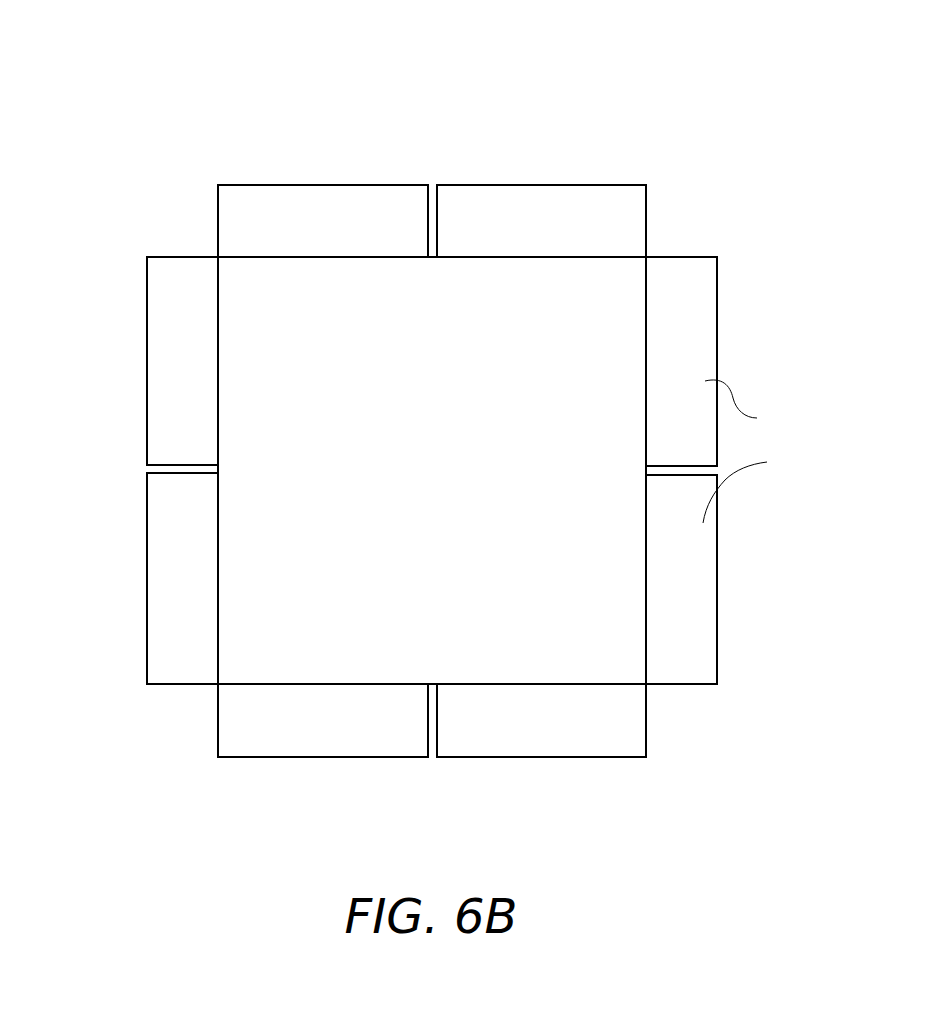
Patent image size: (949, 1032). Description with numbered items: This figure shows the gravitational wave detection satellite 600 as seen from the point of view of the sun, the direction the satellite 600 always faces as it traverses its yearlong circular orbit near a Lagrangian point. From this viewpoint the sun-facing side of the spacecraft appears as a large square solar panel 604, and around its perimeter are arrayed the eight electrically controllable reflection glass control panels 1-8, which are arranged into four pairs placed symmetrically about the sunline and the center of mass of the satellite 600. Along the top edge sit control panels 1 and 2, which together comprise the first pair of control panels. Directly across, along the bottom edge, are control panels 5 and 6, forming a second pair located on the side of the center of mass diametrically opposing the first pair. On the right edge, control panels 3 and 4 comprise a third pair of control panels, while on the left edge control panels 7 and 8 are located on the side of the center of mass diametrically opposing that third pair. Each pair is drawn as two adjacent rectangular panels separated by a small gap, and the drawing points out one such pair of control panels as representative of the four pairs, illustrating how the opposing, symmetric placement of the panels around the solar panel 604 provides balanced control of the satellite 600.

The satellite 600 is at (382, 92).
The solar panel 604 is at (432, 470).
The control panel 1 is at (323, 221).
The control panel 2 is at (541, 221).
The control panel 3 is at (681, 361).
The control panel 4 is at (681, 579).
The control panel 5 is at (541, 720).
The control panel 6 is at (323, 720).
The control panel 7 is at (182, 578).
The control panel 8 is at (182, 361).